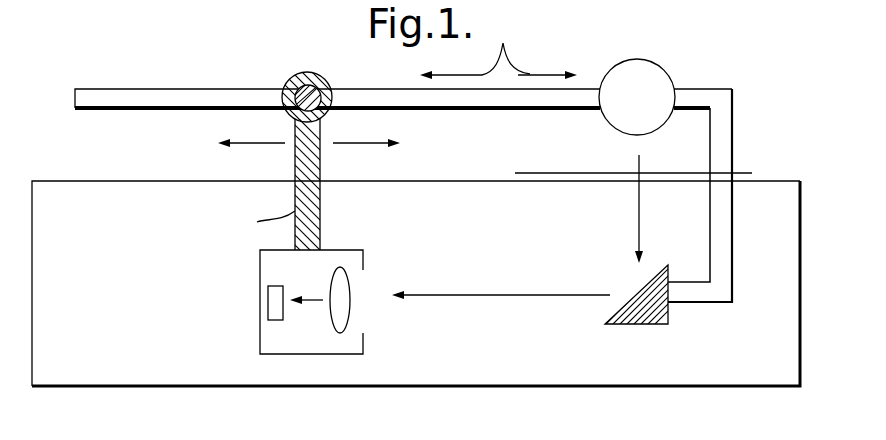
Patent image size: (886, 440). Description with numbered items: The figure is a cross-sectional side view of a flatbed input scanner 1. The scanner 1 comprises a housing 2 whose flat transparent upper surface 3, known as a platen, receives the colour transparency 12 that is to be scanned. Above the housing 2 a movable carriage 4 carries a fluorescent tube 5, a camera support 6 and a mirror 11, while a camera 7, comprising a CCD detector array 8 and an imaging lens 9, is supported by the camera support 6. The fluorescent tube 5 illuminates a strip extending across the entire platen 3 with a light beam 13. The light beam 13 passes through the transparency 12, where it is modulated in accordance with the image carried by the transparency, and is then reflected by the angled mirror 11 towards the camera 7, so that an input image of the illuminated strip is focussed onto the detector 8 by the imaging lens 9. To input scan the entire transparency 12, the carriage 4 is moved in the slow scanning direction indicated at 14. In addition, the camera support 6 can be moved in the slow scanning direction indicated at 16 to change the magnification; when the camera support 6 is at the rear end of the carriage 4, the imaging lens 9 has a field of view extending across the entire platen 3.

The flatbed input scanner 1 is at (195, 65).
The housing 2 is at (78, 389).
The flat transparent upper surface 3 is at (89, 181).
The movable carriage 4 is at (120, 102).
The fluorescent tube 5 is at (664, 71).
The camera support 6 is at (290, 81).
The camera 7 is at (223, 290).
The CCD detector array 8 is at (270, 306).
The imaging lens 9 is at (352, 286).
The mirror 11 is at (632, 324).
The colour transparency 12 is at (552, 173).
The light beam 13 is at (639, 214).
The slow scanning direction 14 is at (498, 49).
The slow scanning direction of camera support movement 16 is at (238, 143).